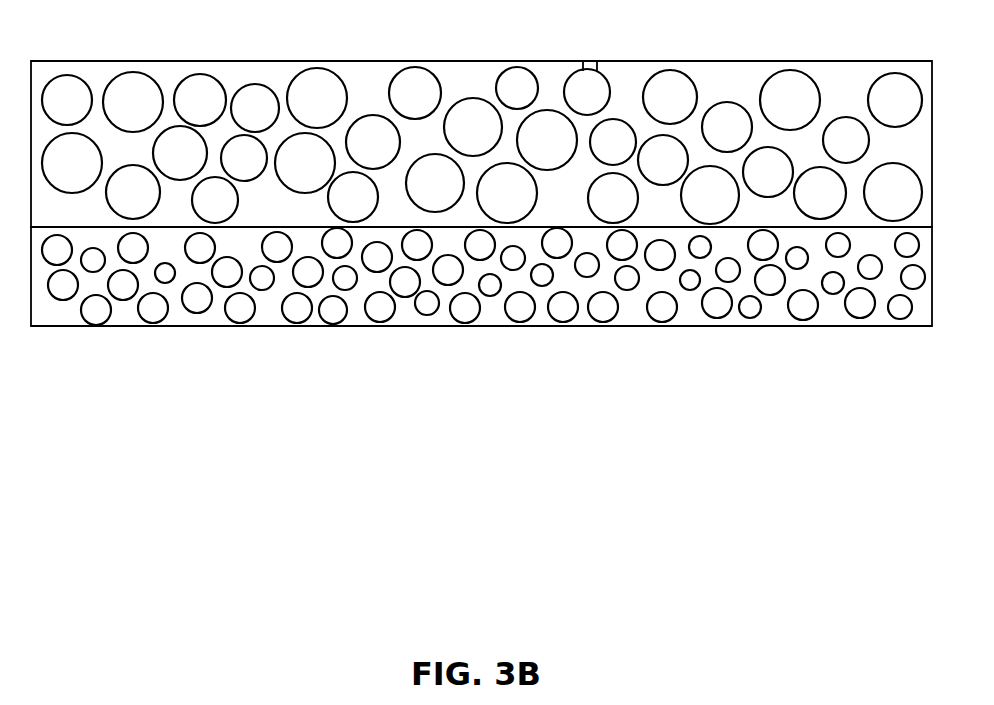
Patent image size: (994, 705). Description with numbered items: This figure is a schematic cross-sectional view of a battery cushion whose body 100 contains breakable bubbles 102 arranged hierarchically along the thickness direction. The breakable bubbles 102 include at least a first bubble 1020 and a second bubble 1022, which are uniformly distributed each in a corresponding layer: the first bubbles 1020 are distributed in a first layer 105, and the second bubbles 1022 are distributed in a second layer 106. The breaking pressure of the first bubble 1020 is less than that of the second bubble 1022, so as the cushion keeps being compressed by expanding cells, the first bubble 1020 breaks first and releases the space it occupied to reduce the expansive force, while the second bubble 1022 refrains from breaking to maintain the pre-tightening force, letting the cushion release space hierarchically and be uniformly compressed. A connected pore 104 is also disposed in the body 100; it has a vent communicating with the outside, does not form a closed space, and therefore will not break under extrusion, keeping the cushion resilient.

The body 100 is at (481, 283).
The breakable bubbles 102 is at (483, 282).
The connected pore 104 is at (588, 60).
The first layer 105 is at (725, 82).
The second layer 106 is at (837, 317).
The first bubble 1020 is at (318, 82).
The second bubble 1022 is at (520, 312).